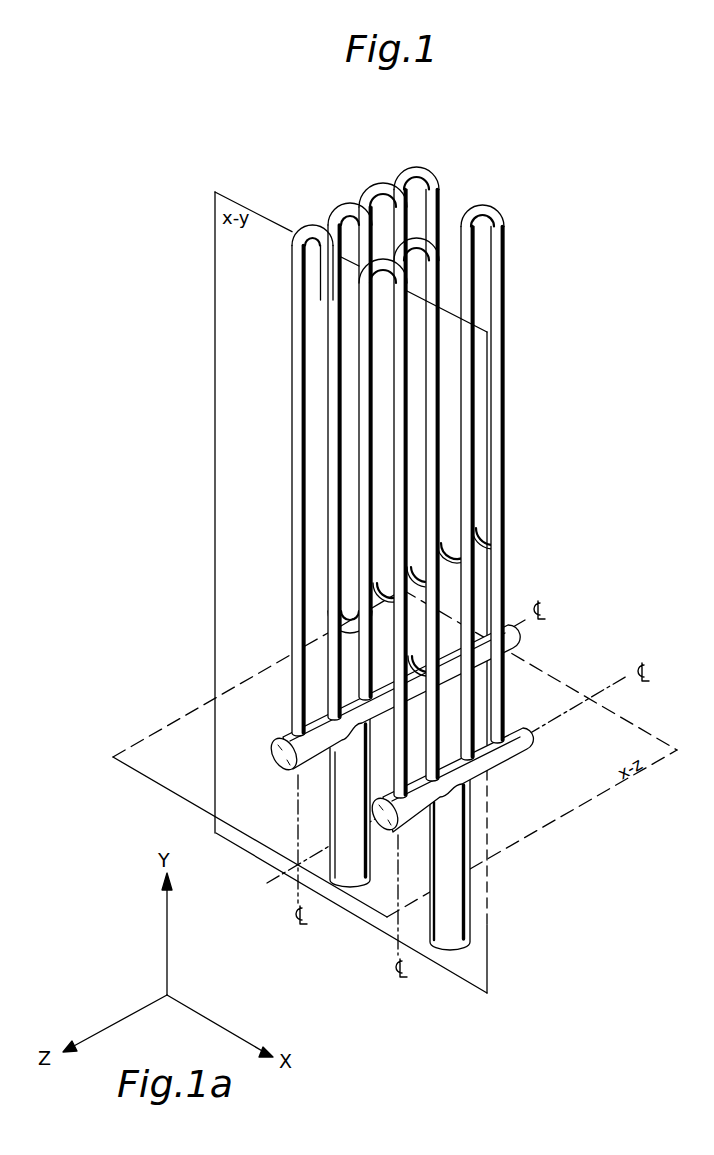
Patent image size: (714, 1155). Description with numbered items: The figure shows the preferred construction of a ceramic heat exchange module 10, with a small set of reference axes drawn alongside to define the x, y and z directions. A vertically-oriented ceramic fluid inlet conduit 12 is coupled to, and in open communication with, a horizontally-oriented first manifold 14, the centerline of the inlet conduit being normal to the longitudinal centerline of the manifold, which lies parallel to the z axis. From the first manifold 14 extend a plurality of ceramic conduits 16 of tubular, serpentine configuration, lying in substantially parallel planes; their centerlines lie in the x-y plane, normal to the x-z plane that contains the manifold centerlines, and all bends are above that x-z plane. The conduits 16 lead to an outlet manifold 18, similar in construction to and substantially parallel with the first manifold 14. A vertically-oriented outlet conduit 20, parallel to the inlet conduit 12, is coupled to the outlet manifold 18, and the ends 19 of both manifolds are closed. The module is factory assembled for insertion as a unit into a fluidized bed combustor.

The ceramic heat exchange module 10 is at (431, 558).
The fluid inlet conduit 12 is at (471, 850).
The first manifold 14 is at (522, 745).
The ceramic conduits 16 is at (476, 704).
The outlet manifold 18 is at (387, 730).
The ends of manifolds 19 is at (362, 822).
The outlet conduit 20 is at (337, 808).